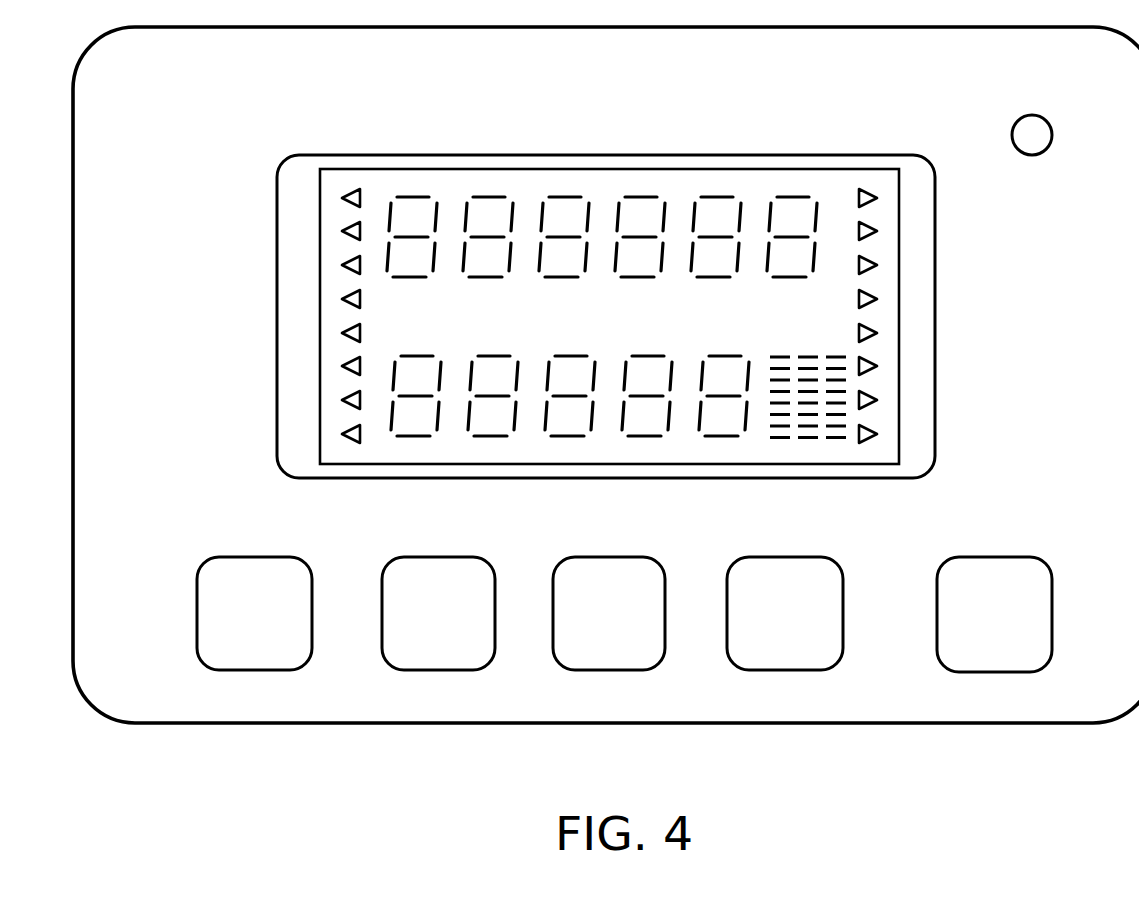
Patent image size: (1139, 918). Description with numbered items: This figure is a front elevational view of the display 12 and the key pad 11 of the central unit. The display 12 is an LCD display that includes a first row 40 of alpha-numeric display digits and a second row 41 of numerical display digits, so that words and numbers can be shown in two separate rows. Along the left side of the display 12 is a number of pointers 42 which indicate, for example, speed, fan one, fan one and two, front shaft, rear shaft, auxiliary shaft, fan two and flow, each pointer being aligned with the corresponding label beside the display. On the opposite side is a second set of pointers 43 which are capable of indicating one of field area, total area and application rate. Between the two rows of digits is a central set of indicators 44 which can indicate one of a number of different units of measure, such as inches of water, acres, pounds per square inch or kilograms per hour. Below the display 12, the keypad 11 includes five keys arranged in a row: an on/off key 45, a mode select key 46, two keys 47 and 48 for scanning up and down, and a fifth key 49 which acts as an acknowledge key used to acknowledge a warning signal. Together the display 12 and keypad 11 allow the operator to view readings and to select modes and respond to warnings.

The key pad 11 is at (484, 679).
The display 12 is at (585, 154).
The first row of alpha-numeric display digits 40 is at (823, 226).
The second row of numerical display digits 41 is at (900, 383).
The pointers 42 is at (351, 185).
The second set of pointers 43 is at (879, 181).
The central set of indicators 44 is at (669, 213).
The on/off key 45 is at (993, 656).
The mode select key 46 is at (773, 649).
The up scanning key 47 is at (442, 651).
The down scanning key 48 is at (607, 649).
The acknowledge key 49 is at (240, 651).